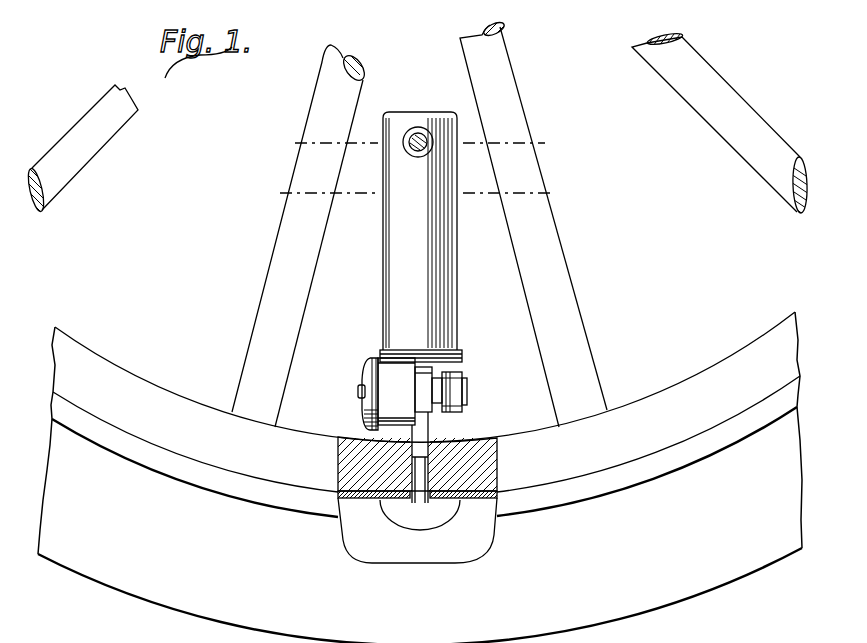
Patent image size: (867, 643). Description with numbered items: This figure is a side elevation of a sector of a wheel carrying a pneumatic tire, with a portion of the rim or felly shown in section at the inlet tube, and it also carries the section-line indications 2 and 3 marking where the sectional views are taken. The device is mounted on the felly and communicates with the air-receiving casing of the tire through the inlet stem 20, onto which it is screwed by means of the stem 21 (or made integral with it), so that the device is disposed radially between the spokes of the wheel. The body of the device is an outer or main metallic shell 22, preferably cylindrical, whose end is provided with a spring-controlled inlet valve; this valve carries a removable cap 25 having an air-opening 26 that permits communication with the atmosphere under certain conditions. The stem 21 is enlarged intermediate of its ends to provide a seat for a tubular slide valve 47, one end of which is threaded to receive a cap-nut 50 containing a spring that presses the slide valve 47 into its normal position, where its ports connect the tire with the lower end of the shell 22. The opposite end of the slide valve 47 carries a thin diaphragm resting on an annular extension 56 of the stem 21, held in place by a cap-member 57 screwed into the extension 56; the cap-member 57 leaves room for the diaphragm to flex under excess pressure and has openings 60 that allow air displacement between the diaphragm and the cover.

The section line 2- 2 is at (547, 151).
The section line 3- 3 is at (558, 199).
The inlet stem 20 is at (422, 503).
The stem 21 is at (430, 472).
The outer shell 22 is at (458, 328).
The cap 25 is at (428, 129).
The air-opening 26 is at (414, 131).
The tubular slide valve 47 is at (467, 389).
The cap-nut 50 is at (462, 368).
The annular extension 56 is at (397, 372).
The cap-member 57 is at (370, 379).
The openings 60 is at (358, 392).